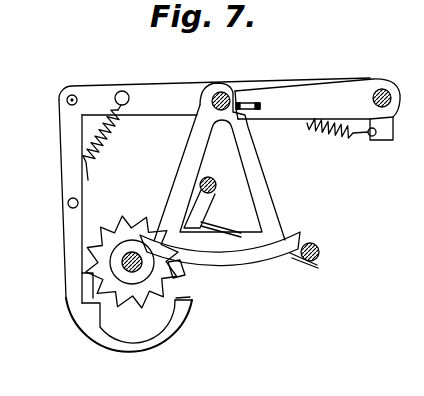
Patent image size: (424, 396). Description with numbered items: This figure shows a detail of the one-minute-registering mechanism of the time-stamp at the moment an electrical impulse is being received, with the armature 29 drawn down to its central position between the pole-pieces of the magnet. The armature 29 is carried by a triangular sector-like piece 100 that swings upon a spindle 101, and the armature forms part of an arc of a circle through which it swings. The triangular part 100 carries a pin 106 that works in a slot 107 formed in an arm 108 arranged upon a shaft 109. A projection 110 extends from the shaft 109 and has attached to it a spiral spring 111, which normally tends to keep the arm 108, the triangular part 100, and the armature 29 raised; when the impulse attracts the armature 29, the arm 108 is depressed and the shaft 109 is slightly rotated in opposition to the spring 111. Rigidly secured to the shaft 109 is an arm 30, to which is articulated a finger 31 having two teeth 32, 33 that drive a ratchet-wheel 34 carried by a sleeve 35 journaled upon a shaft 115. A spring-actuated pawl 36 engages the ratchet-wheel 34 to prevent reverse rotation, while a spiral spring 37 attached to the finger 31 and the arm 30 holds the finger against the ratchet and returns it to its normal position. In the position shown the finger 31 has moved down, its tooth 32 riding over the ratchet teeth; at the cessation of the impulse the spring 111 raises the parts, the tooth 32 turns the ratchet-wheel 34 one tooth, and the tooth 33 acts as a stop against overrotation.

The armature 29 is at (245, 258).
The arm 30 is at (168, 88).
The finger 31 is at (67, 181).
The tooth 32 is at (90, 308).
The tooth 33 is at (185, 313).
The ratchet-wheel 34 is at (128, 216).
The sleeve 35 is at (122, 263).
The spring-actuated pawl 36 is at (206, 205).
The spiral spring 37 is at (114, 137).
The triangular sector-like piece 100 is at (258, 177).
The spindle 101 is at (222, 92).
The pin 106 is at (250, 103).
The slot 107 is at (258, 107).
The arm 108 is at (317, 99).
The shaft 109 is at (383, 89).
The projection 110 is at (386, 142).
The spiral spring 111 is at (337, 141).
The shaft 115 is at (167, 282).